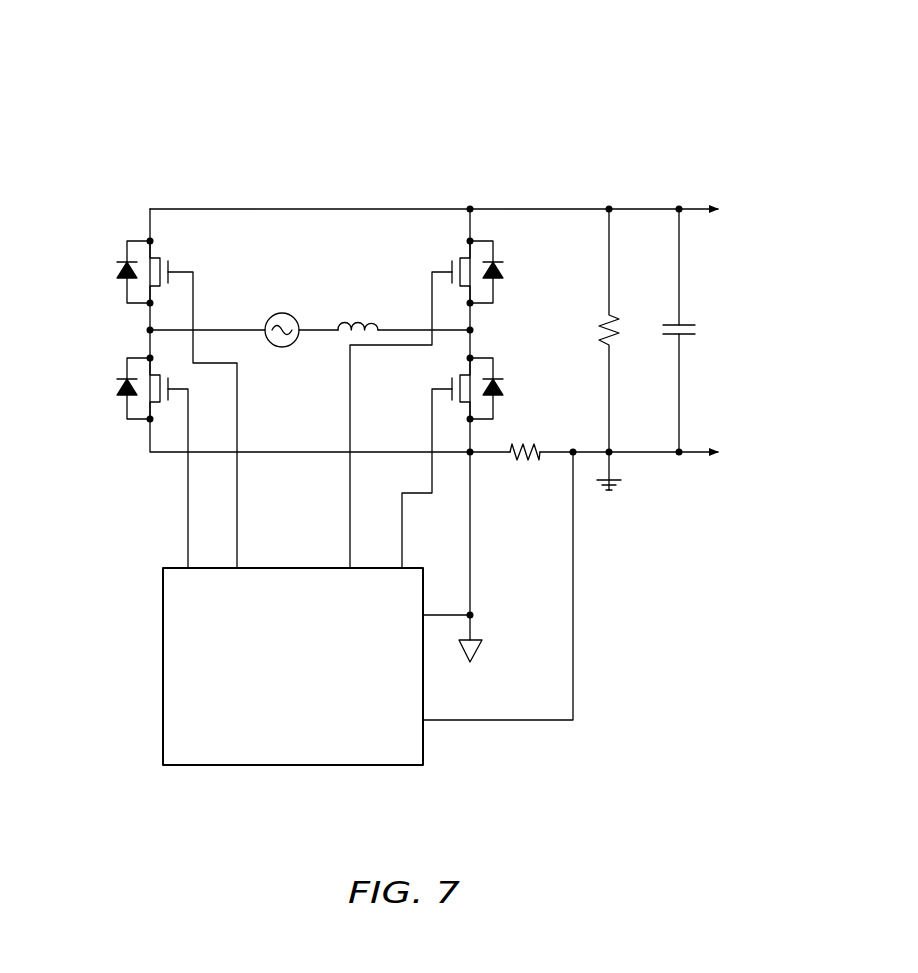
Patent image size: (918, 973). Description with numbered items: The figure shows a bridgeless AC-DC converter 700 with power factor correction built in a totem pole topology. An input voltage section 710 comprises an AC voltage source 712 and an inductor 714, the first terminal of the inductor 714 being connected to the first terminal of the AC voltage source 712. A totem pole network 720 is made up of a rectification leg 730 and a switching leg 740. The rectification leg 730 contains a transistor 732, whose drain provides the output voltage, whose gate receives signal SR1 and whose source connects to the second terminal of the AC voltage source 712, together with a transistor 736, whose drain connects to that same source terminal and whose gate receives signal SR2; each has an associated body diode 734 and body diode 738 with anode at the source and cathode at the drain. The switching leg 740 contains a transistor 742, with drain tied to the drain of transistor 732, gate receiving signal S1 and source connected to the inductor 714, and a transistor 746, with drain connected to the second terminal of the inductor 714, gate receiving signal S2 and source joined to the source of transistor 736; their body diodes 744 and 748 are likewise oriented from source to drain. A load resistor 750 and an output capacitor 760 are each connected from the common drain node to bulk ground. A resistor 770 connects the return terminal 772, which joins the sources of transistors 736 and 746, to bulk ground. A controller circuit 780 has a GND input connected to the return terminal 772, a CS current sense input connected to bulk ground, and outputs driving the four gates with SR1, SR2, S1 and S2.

The bridgeless AC-DC converter 700 is at (148, 42).
The input voltage section 710 is at (278, 310).
The AC voltage source 712 is at (292, 316).
The inductor 714 is at (363, 324).
The totem pole network 720 is at (217, 178).
The rectification leg 730 is at (171, 188).
The transistor 732 is at (157, 258).
The body diode 734 is at (122, 279).
The transistor 736 is at (157, 375).
The body diode 738 is at (122, 395).
The switching leg 740 is at (487, 188).
The transistor 742 is at (458, 258).
The body diode 744 is at (503, 272).
The transistor 746 is at (458, 376).
The body diode 748 is at (503, 390).
The load resistor 750 is at (600, 330).
The output capacitor 760 is at (690, 330).
The resistor 770 is at (522, 458).
The return terminal 772 is at (474, 456).
The controller circuit 780 is at (163, 637).